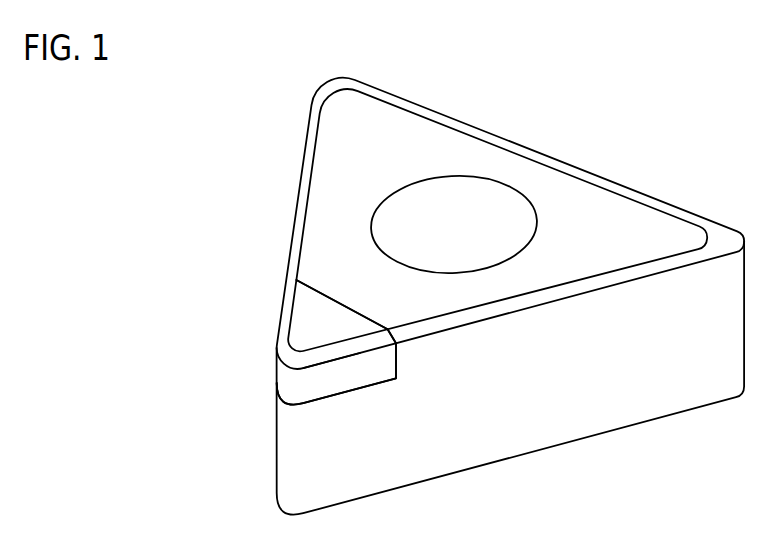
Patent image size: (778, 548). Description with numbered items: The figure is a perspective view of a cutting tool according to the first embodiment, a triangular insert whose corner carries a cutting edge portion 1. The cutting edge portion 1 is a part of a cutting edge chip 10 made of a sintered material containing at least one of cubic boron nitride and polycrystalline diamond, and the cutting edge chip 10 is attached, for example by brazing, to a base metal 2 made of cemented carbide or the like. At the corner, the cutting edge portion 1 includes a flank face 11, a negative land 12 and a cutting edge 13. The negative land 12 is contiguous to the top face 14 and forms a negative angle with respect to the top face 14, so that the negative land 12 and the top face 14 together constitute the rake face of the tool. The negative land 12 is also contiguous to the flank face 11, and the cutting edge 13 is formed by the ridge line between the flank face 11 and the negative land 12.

The cutting edge portion 1 is at (213, 273).
The base metal 2 is at (276, 468).
The cutting edge chip 10 is at (277, 385).
The flank face 11 is at (307, 380).
The negative land 12 is at (333, 352).
The cutting edge 13 is at (322, 363).
The top face 14 is at (303, 305).